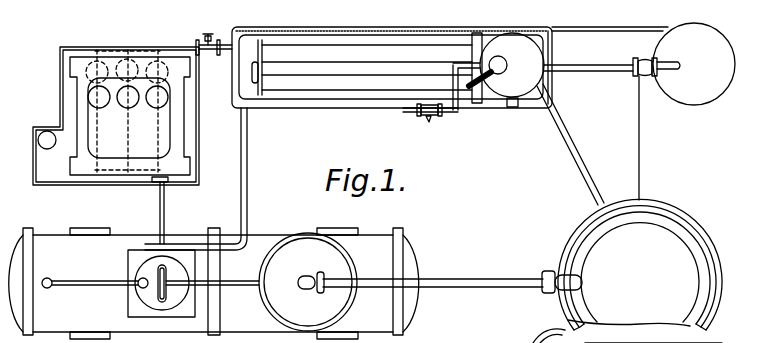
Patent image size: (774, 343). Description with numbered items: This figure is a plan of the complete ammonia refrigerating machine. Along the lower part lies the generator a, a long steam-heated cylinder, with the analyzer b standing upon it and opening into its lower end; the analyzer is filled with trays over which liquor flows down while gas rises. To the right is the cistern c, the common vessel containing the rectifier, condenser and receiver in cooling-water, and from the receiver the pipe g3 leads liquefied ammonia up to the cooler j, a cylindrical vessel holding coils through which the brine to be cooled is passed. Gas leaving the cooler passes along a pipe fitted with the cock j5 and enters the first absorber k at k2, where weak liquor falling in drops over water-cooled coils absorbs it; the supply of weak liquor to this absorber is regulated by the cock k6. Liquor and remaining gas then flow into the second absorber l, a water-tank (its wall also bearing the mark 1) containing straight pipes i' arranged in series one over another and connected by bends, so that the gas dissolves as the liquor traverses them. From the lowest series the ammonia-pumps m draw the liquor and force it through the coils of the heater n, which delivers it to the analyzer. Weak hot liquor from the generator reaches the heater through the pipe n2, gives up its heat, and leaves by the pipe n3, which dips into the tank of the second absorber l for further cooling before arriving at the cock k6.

The ammonia-pump m is at (116, 116).
The second absorber l is at (386, 67).
The pipes i' is at (367, 67).
The pipe 1 is at (553, 28).
The first absorber k is at (506, 70).
The gas inlet k2 is at (588, 56).
The cock j5 is at (656, 57).
The cooler j is at (694, 64).
The pipe g3 is at (649, 138).
The cock k6 is at (441, 101).
The pipe n3 is at (204, 179).
The pipe n2 is at (150, 275).
The heater n is at (161, 283).
The generator a is at (214, 283).
The analyzer b is at (308, 282).
The cistern c is at (627, 271).